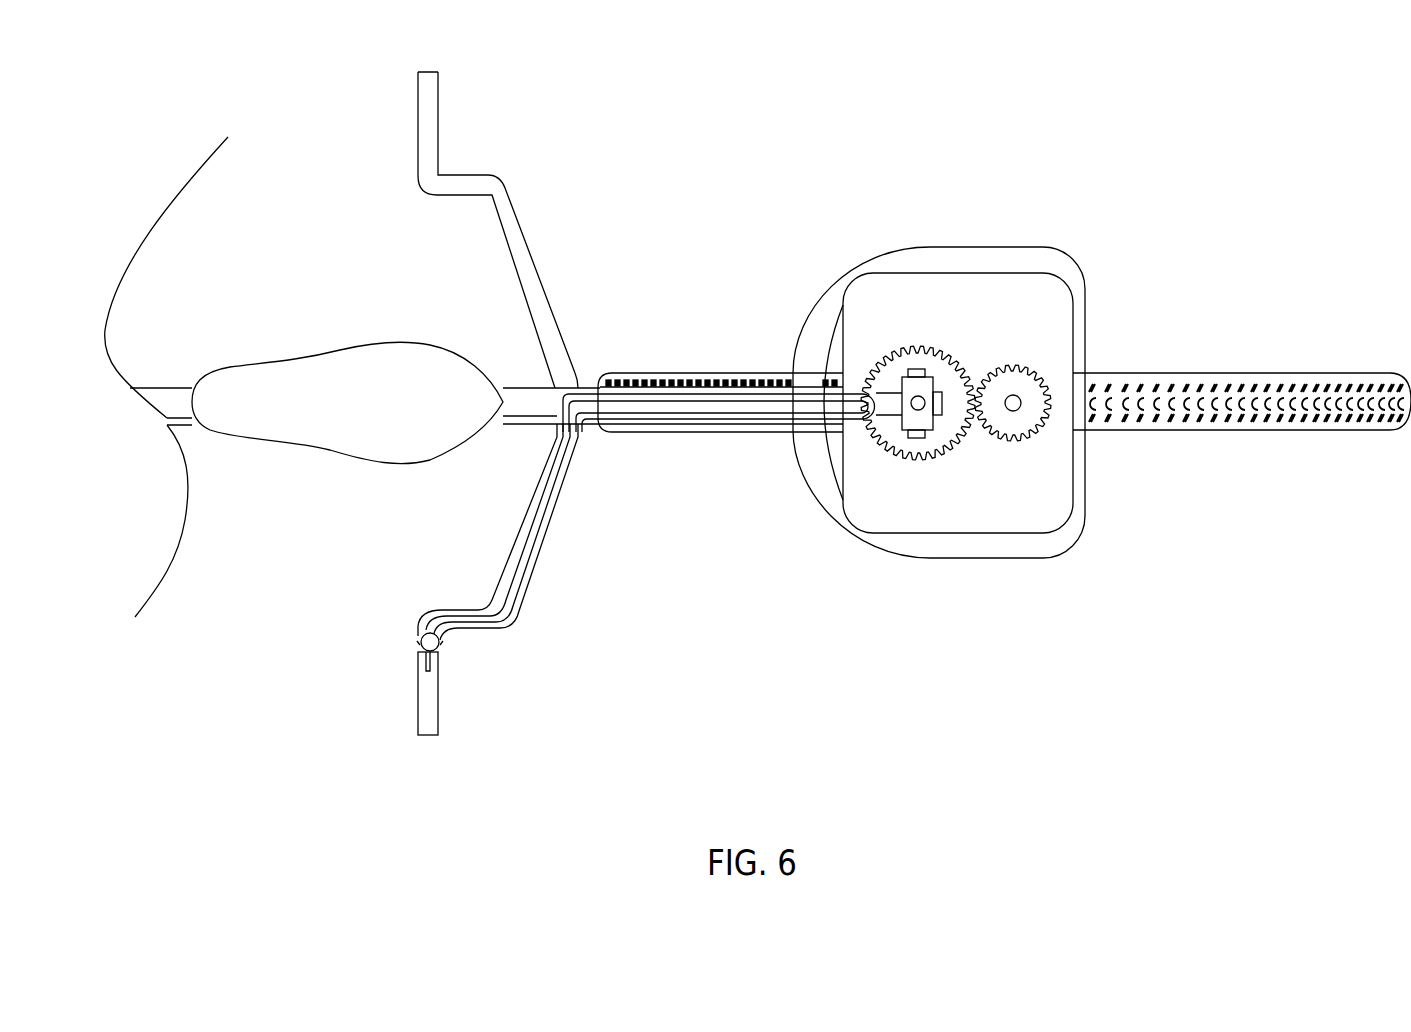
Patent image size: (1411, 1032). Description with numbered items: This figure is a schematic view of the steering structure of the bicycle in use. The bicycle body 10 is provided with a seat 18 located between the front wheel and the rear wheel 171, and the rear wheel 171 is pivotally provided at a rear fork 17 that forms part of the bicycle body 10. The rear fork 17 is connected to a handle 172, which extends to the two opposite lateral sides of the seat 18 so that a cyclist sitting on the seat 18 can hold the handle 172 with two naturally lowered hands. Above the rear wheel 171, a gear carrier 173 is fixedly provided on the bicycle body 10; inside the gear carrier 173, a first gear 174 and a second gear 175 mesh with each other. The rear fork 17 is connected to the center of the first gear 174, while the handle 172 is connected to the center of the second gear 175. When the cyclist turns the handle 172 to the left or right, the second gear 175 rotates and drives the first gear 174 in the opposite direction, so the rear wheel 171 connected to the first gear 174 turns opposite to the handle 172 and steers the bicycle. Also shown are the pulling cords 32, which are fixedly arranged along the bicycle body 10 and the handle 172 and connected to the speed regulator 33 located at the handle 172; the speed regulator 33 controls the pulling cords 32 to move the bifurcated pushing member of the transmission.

The bicycle body 10 is at (162, 384).
The seat 18 is at (345, 425).
The handle 172 is at (517, 230).
The pulling cords 32 is at (523, 548).
The speed regulator 33 is at (417, 647).
The gear carrier 173 is at (1040, 257).
The second gear 175 is at (938, 453).
The first gear 174 is at (1032, 440).
The rear fork 17 is at (1013, 395).
The rear wheel 171 is at (1270, 430).